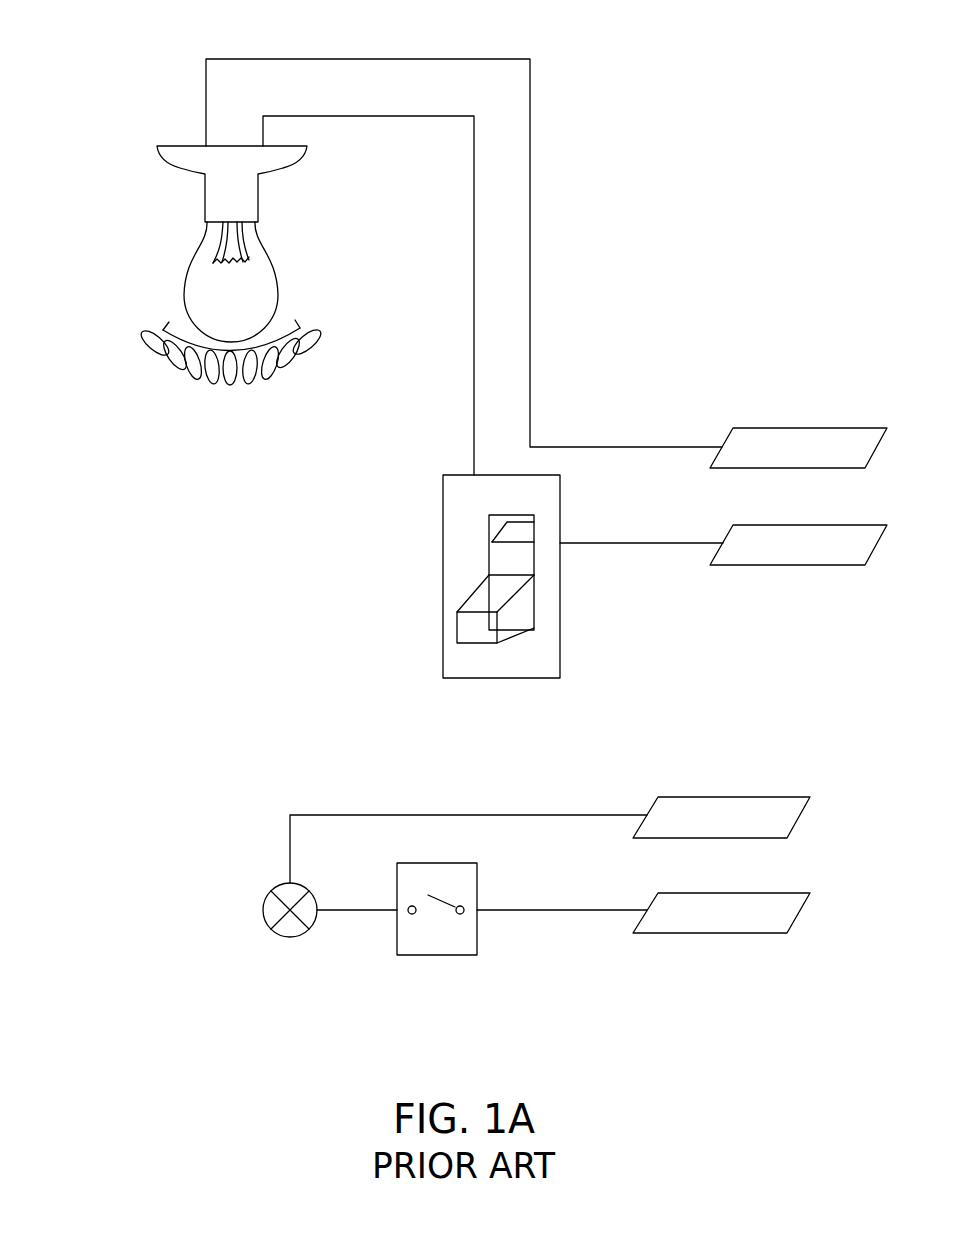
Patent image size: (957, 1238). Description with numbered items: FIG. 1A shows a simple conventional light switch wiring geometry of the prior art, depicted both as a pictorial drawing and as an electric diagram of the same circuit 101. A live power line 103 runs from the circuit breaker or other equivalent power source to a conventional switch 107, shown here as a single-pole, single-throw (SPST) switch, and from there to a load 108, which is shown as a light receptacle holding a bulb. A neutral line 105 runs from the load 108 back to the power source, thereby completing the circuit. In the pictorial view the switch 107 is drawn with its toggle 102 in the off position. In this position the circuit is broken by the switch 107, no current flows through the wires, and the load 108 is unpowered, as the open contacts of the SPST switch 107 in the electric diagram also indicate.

The prior art lighting circuit 101 is at (100, 432).
The toggle 102 is at (462, 628).
The live power line 103 is at (652, 543).
The neutral line 105 is at (650, 446).
The conventional switch 107 is at (461, 747).
The load 108 is at (172, 167).